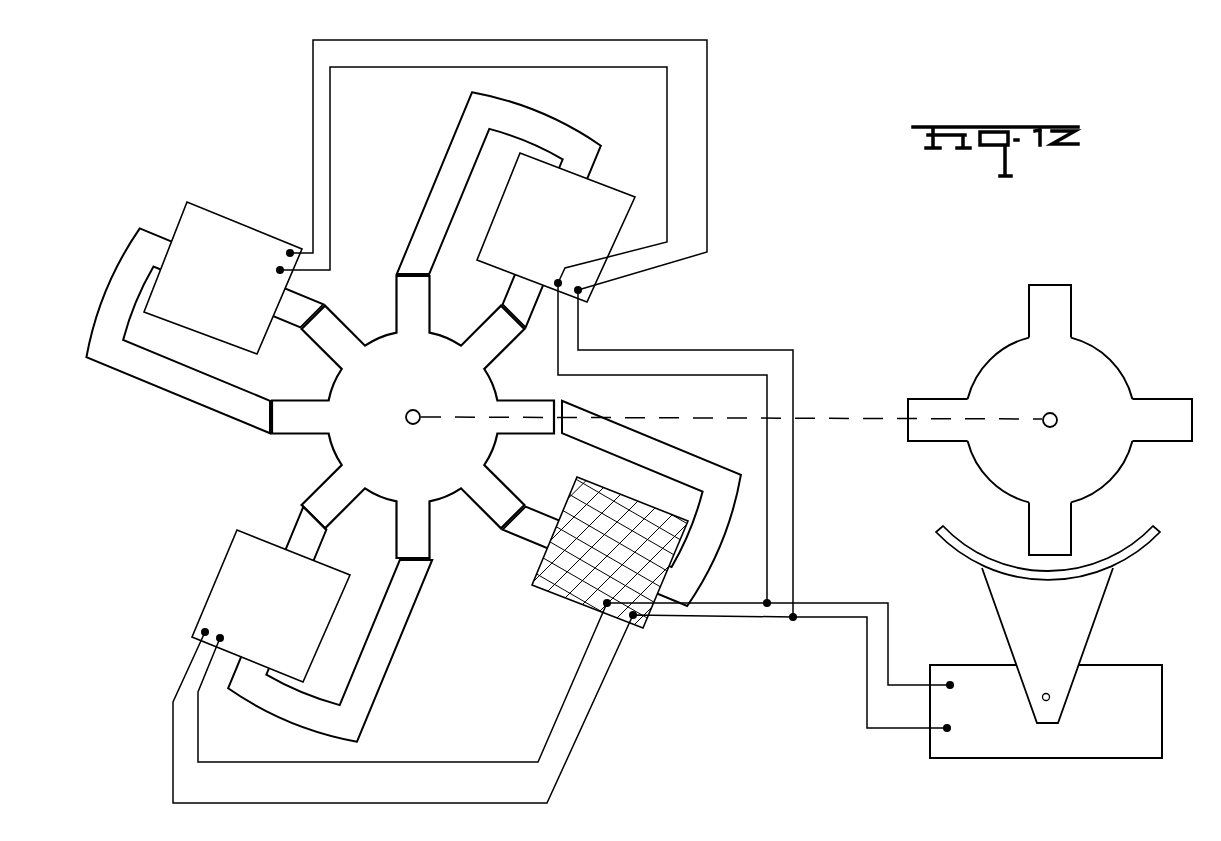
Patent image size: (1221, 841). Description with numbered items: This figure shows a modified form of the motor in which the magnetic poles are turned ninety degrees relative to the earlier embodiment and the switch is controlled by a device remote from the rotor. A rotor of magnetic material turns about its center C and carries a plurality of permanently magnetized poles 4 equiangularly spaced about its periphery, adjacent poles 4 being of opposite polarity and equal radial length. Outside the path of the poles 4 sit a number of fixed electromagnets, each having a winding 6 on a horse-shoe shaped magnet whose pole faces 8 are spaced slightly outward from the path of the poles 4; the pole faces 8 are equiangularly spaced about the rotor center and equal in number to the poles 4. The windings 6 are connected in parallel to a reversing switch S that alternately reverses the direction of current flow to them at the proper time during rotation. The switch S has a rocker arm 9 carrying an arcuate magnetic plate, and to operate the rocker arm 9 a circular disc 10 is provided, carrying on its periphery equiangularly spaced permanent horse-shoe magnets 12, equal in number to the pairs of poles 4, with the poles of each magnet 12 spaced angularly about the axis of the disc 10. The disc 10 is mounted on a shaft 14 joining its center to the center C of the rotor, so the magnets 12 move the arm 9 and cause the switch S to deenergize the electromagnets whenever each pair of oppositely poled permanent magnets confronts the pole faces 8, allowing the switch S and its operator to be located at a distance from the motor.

The permanently magnetized poles 4 is at (345, 322).
The winding 6 is at (215, 222).
The pole faces 8 is at (408, 250).
The rocker arm 9 is at (1087, 614).
The circular disc 10 is at (1120, 378).
The permanent horse-shoe magnets 12 is at (1057, 303).
The shaft 14 is at (818, 420).
The center C is at (416, 410).
The reversing switch S is at (1155, 690).